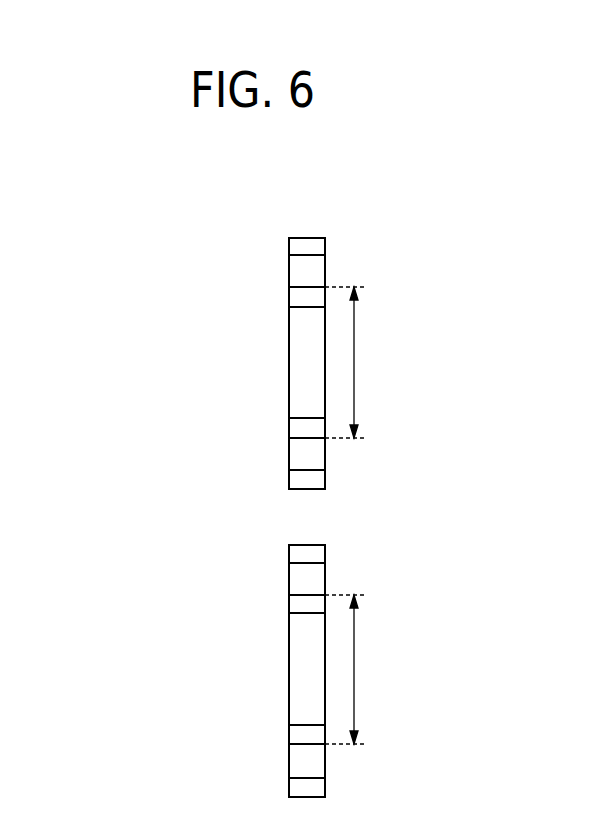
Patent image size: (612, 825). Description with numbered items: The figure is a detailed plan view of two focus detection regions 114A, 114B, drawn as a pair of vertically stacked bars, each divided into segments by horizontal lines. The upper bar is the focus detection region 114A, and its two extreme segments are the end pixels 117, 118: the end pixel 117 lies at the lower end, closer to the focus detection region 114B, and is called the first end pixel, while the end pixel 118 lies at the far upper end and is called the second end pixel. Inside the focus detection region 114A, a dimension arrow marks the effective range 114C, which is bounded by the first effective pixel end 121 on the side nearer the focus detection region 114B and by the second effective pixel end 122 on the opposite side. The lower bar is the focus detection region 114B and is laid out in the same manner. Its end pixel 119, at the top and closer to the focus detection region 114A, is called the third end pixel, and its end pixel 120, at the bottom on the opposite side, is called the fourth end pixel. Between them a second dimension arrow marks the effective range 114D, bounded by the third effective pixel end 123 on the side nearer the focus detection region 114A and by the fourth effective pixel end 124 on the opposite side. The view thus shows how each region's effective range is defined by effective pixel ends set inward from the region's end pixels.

The focus detection region 114A is at (245, 342).
The focus detection region 114B is at (245, 652).
The effective range 114C is at (354, 365).
The effective range 114D is at (354, 672).
The end pixel 117 is at (322, 482).
The end pixel 118 is at (322, 248).
The end pixel 119 is at (322, 555).
The end pixel 120 is at (322, 790).
The first effective pixel end 121 is at (298, 432).
The second effective pixel end 122 is at (298, 297).
The third effective pixel end 123 is at (298, 605).
The fourth effective pixel end 124 is at (298, 740).